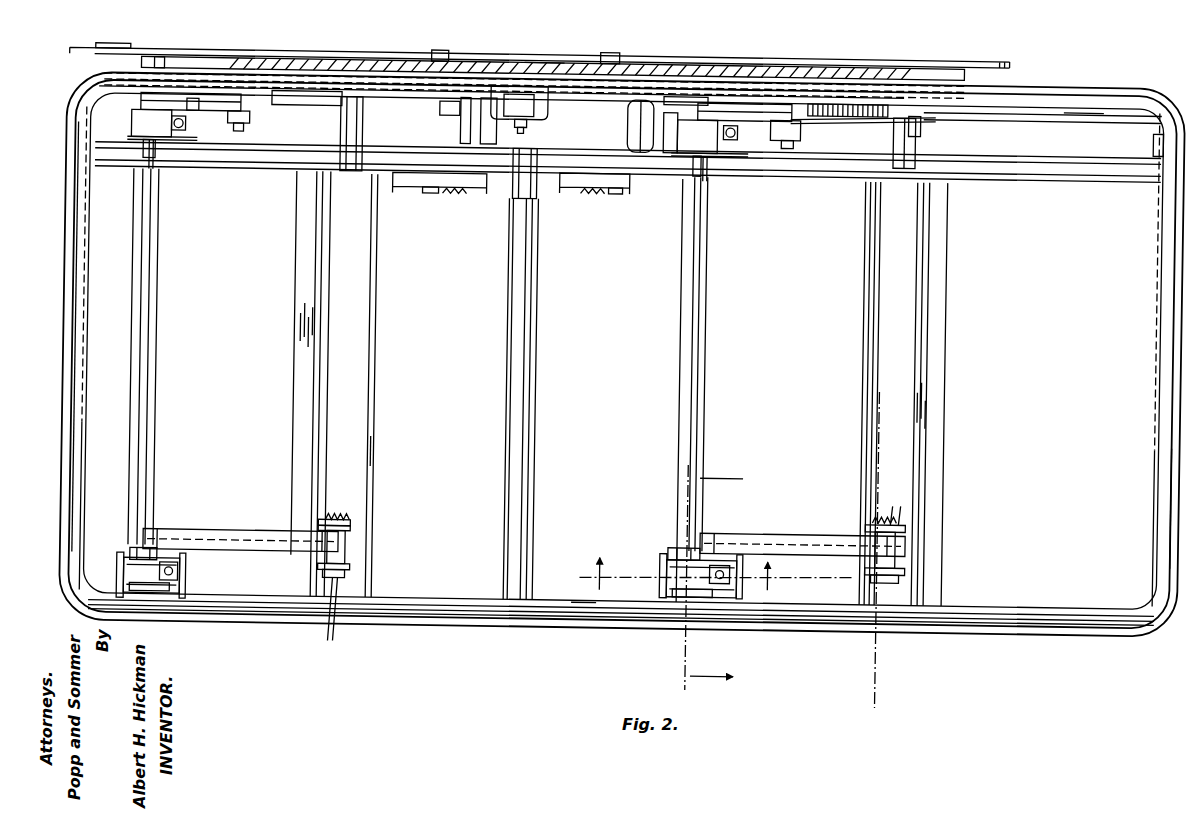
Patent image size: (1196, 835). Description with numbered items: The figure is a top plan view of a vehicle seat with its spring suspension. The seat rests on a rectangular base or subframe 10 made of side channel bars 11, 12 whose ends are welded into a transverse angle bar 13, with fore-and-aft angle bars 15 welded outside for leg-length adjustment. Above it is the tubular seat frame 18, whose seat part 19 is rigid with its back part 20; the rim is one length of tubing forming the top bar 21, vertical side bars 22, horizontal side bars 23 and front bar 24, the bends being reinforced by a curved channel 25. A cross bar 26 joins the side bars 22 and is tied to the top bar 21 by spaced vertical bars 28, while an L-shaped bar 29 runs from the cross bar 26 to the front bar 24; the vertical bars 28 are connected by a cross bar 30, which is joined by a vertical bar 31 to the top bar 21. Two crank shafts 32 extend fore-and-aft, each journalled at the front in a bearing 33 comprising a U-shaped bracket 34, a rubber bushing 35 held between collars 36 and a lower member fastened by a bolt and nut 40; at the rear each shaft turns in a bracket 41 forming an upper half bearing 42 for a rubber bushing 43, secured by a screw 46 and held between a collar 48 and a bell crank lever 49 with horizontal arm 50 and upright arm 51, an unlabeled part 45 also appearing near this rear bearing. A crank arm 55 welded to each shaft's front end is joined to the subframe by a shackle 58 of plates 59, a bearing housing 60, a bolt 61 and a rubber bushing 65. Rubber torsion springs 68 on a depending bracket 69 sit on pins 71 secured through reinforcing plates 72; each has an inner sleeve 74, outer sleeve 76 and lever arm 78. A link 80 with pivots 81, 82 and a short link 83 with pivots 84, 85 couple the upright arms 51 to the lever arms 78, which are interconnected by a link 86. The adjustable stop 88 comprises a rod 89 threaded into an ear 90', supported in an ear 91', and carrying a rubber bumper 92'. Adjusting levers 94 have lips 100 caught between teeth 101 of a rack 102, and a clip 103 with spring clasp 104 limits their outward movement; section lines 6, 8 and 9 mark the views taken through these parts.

The section line 6- 6 is at (712, 578).
The section line 8- 8 is at (880, 552).
The section line 9- 9 is at (715, 573).
The base or subframe 10 is at (377, 397).
The side channel bar 11 is at (862, 333).
The side channel bar 12 is at (376, 453).
The transverse angle bar 13 is at (524, 618).
The angle bar (fore-and-aft rail) 15 is at (293, 405).
The seat frame 18 is at (474, 610).
The seat part 19 is at (1150, 557).
The back part 20 is at (1108, 79).
The top bar 21 is at (1078, 81).
The side bar (back part) 22 is at (88, 195).
The side bar (seat part) 23 is at (84, 472).
The front bar 24 is at (589, 603).
The curved channel 25 is at (88, 411).
The cross bar 26 is at (1058, 175).
The vertical bar 28 is at (347, 176).
The L-shaped bar 29 is at (537, 407).
The horizontal cross bar 30 is at (624, 117).
The vertical bar 31 is at (624, 140).
The crank shaft 32 is at (157, 379).
The bearing 33 is at (167, 600).
The U-shaped bracket 34 is at (181, 572).
The rubber bushing 35 is at (128, 562).
The collar 36 is at (134, 555).
The bolt and nut 40 is at (183, 582).
The bracket 41 is at (128, 123).
The upper half bearing 42 is at (122, 147).
The rubber bushing 43 is at (150, 160).
The bracket 45 is at (190, 110).
The screw or bolt 46 is at (182, 136).
The collar 48 is at (148, 170).
The bell crank lever 49 is at (198, 100).
The horizontal crank arm 50 is at (283, 96).
The upright crank arm 51 is at (210, 100).
The crank arm 55 is at (245, 536).
The shackle 58 is at (354, 522).
The shackle plate 59 is at (320, 527).
The bearing housing 60 is at (348, 554).
The bolt 61 is at (613, 570).
The rubber bushing 65 is at (353, 534).
The rubber torsion spring 68 is at (435, 197).
The depending bracket 69 is at (507, 184).
The pin 71 is at (428, 197).
The reinforcing plate 72 is at (453, 197).
The sleeve 74 is at (483, 64).
The outer sleeve 76 is at (457, 130).
The lever arm 78 is at (440, 108).
The link 80 is at (246, 124).
The pivot 81 is at (232, 137).
The pivot 82 is at (524, 133).
The short link 83 is at (797, 128).
The pivot 84 is at (785, 146).
The pivot 85 is at (667, 152).
The link 86 is at (544, 116).
The adjustable stop 88 is at (1027, 110).
The horizontal rod 89 is at (1074, 107).
The threaded ear 90' is at (948, 126).
The ear 91' is at (1144, 145).
The rubber bumper 92' is at (848, 98).
The adjusting lever 94 is at (78, 56).
The lip or flange 100 is at (876, 67).
The teeth 101 is at (796, 67).
The rack 102 is at (532, 66).
The clip 103 is at (96, 78).
The spring clasp 104 is at (128, 52).